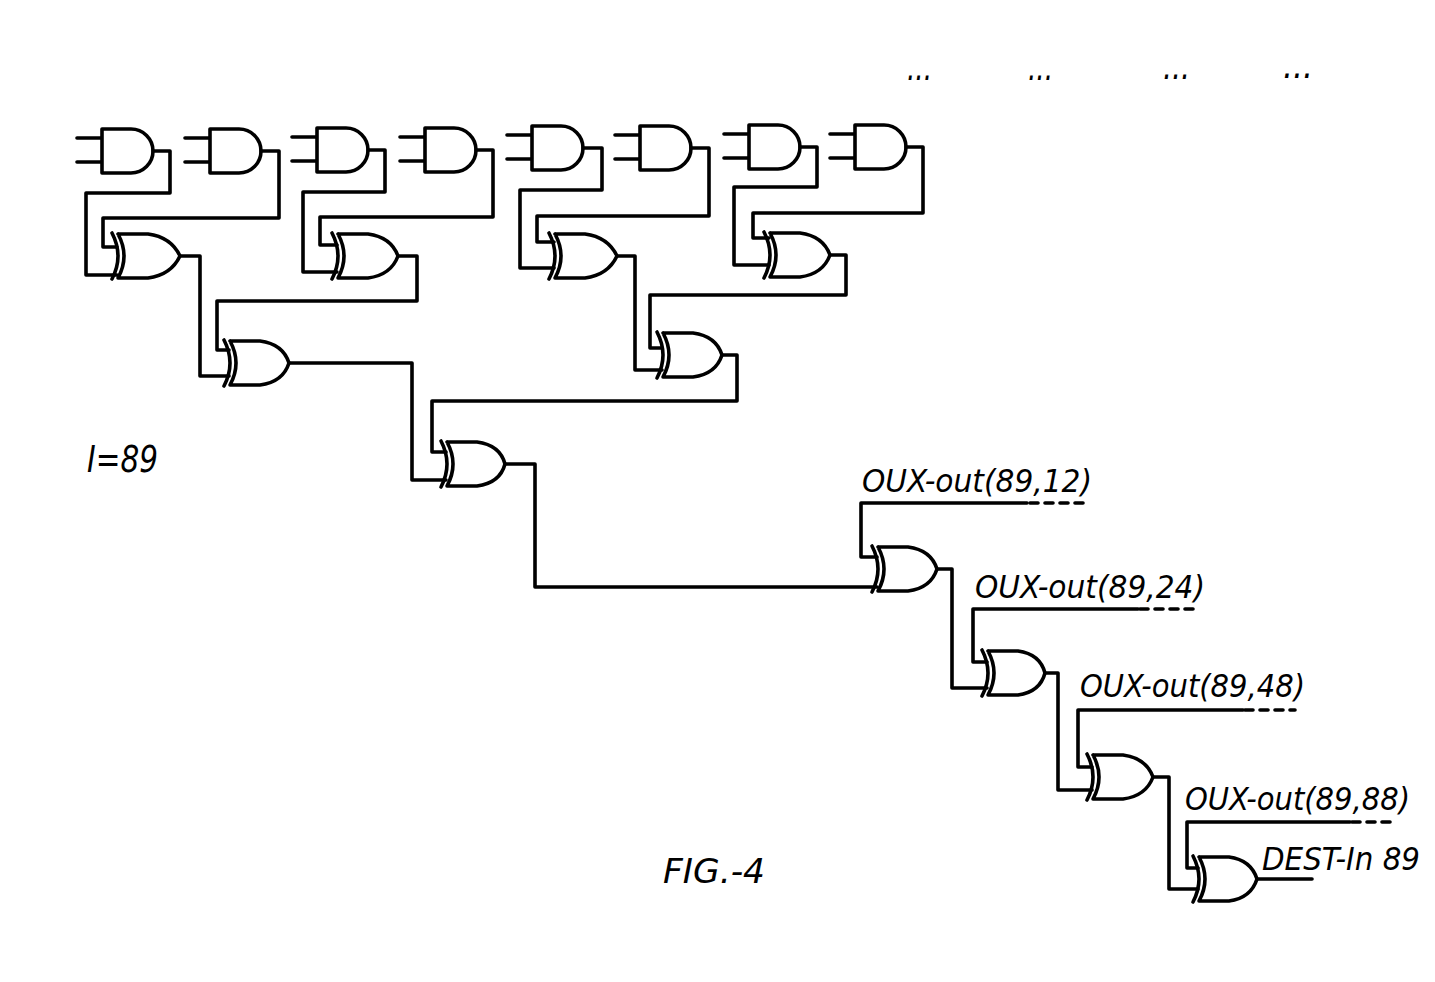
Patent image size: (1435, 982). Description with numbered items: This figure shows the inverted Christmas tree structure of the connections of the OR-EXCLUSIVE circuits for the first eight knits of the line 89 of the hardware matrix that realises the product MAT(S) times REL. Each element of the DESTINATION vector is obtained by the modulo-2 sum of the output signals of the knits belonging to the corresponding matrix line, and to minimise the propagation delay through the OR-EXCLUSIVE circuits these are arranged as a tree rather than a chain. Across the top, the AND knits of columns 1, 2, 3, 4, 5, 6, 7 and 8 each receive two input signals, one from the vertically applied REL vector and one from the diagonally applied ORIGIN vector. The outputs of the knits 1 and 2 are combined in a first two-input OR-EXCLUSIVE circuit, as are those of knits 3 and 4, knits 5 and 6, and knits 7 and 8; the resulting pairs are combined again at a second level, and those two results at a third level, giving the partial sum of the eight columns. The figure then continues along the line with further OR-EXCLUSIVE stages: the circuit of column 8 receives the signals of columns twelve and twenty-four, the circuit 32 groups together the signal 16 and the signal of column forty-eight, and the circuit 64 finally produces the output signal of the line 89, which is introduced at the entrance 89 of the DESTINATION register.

The knit of column 1 is at (113, 115).
The knit of column 2 is at (223, 114).
The knit of column 3 is at (330, 113).
The knit of column 4 is at (438, 113).
The knit of column 5 is at (545, 111).
The knit of column 6 is at (653, 111).
The knit of column 7 is at (762, 110).
The knit of column 8 / OR-EXCLUSIVE circuit of column 8 is at (868, 109).
The signal 16 is at (994, 68).
The circuit 32 is at (1119, 67).
The circuit 64 is at (1242, 66).
The line 89 / entrance 89 of the DESTINATION register 89 is at (1410, 65).